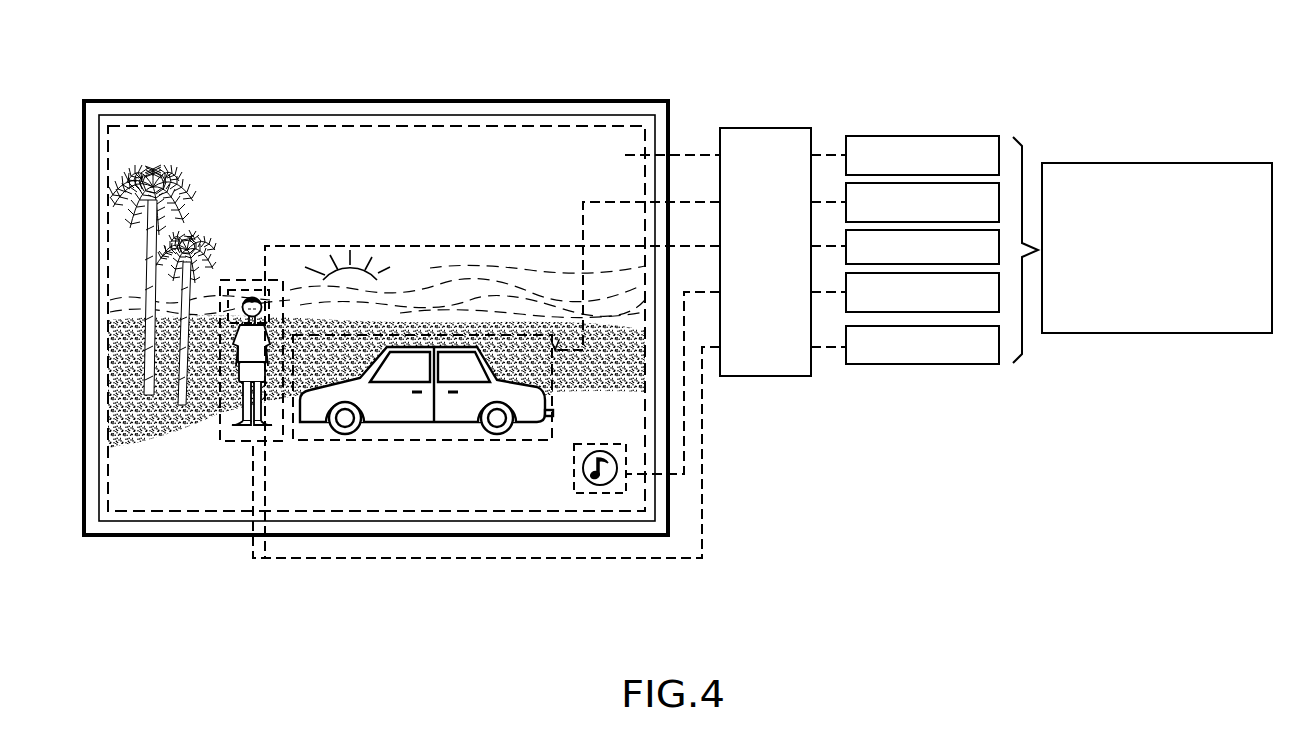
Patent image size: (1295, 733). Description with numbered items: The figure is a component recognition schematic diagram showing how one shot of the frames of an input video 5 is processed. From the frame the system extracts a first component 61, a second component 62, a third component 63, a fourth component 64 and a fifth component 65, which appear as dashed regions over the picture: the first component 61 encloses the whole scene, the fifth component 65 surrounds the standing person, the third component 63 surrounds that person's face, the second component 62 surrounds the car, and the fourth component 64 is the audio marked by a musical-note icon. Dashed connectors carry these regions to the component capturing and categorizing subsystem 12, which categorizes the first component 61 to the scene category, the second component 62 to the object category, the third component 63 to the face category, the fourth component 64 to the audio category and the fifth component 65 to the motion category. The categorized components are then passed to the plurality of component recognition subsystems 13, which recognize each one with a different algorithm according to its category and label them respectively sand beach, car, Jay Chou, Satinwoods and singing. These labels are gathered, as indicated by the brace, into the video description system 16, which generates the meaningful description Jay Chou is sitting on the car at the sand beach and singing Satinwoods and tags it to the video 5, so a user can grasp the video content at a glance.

The video 5 is at (470, 108).
The first component 61 is at (343, 137).
The second component 62 is at (445, 437).
The third component 63 is at (233, 283).
The fourth component 64 is at (615, 497).
The fifth component 65 is at (228, 440).
The component capturing and categorizing subsystem 12 is at (776, 126).
The component recognition subsystems 13 is at (975, 134).
The video description system 16 is at (1172, 161).